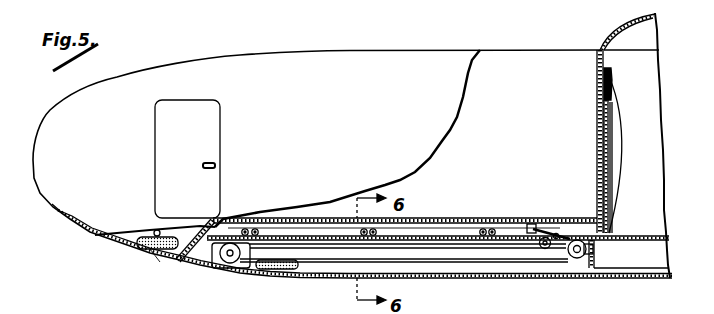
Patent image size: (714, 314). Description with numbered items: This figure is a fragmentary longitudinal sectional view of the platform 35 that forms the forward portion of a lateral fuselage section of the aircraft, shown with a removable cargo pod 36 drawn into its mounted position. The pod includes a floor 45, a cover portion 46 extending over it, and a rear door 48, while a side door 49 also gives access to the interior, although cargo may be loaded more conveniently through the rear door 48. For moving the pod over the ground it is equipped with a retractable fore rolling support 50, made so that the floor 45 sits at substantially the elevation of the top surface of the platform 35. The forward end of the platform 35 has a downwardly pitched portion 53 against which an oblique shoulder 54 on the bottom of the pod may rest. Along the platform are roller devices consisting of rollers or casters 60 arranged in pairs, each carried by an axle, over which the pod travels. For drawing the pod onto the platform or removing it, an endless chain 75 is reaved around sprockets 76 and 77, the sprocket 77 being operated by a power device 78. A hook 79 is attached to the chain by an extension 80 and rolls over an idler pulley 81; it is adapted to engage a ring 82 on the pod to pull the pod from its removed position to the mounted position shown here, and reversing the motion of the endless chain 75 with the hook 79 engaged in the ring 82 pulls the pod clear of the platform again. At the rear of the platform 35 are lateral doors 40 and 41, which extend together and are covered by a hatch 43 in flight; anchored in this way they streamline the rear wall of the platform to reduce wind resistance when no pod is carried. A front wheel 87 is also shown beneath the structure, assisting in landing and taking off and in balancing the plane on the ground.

The platform 35 is at (456, 278).
The cargo pod 36 is at (341, 52).
The lateral door 40 is at (601, 149).
The lateral door 41 is at (607, 155).
The hatch 43 is at (625, 118).
The floor 45 is at (313, 218).
The cover portion 46 is at (438, 134).
The rear door 48 is at (597, 76).
The door 49 is at (212, 117).
The fore rolling support 50 is at (143, 251).
The downwardly pitched portion 53 is at (197, 262).
The oblique shoulder 54 is at (168, 263).
The rollers 60 is at (254, 228).
The endless chain 75 is at (448, 262).
The sprocket 76 is at (577, 259).
The sprocket 77 is at (230, 264).
The power device 78 is at (247, 268).
The hook 79 is at (529, 224).
The extension 80 is at (558, 233).
The idler pulley 81 is at (541, 246).
The ring 82 is at (534, 226).
The front wheel 87 is at (292, 270).